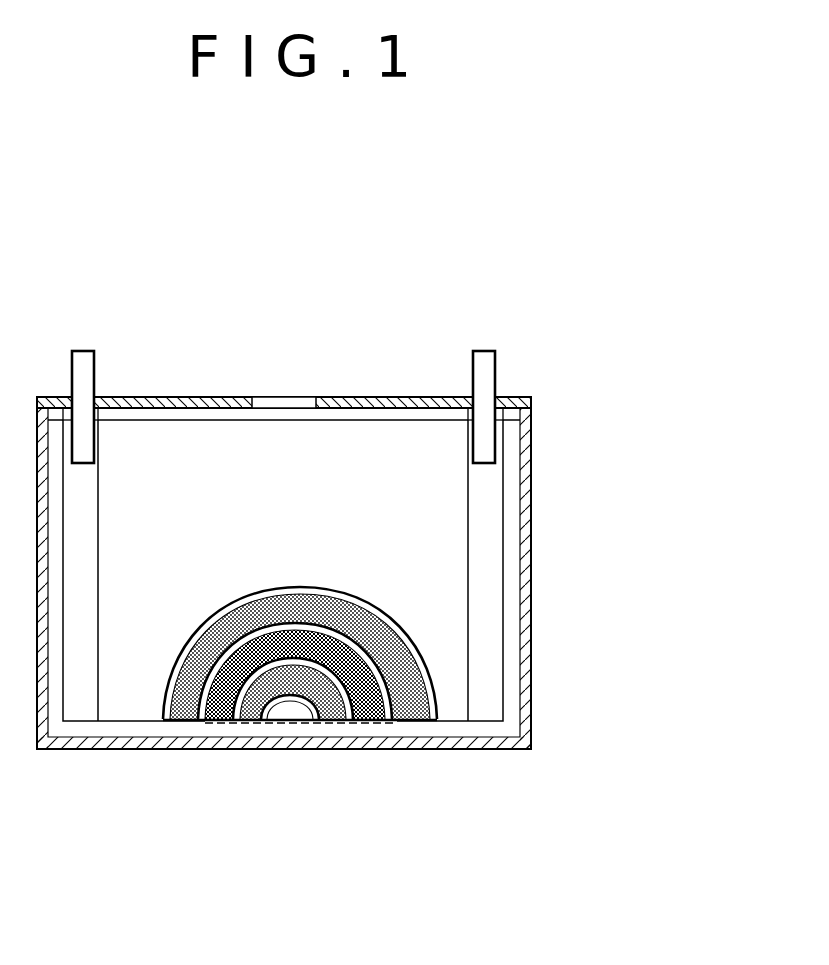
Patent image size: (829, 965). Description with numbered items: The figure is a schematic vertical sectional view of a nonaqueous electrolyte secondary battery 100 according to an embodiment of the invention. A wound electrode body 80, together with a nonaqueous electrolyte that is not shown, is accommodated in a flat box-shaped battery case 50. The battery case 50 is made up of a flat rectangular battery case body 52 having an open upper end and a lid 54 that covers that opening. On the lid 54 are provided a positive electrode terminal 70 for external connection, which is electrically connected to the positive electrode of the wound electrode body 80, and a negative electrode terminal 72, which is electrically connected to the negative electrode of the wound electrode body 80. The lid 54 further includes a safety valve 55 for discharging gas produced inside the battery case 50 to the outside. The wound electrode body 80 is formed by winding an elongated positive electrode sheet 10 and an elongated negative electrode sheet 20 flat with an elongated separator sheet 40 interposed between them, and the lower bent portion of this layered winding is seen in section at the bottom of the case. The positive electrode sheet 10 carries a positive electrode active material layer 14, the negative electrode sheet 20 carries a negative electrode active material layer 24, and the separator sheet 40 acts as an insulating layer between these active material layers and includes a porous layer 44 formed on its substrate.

The nonaqueous electrolyte secondary battery 100 is at (525, 288).
The positive electrode sheet 10 is at (286, 722).
The positive electrode active material layer 14 is at (182, 705).
The negative electrode sheet 20 is at (294, 757).
The negative electrode active material layer 24 is at (252, 703).
The separator sheet 40 is at (283, 656).
The porous layer 44 is at (215, 713).
The battery case 50 is at (334, 533).
The battery case body 52 is at (525, 700).
The lid 54 is at (402, 402).
The safety valve 55 is at (277, 402).
The positive electrode terminal 70 is at (80, 357).
The negative electrode terminal 72 is at (482, 357).
The wound electrode body 80 is at (448, 723).